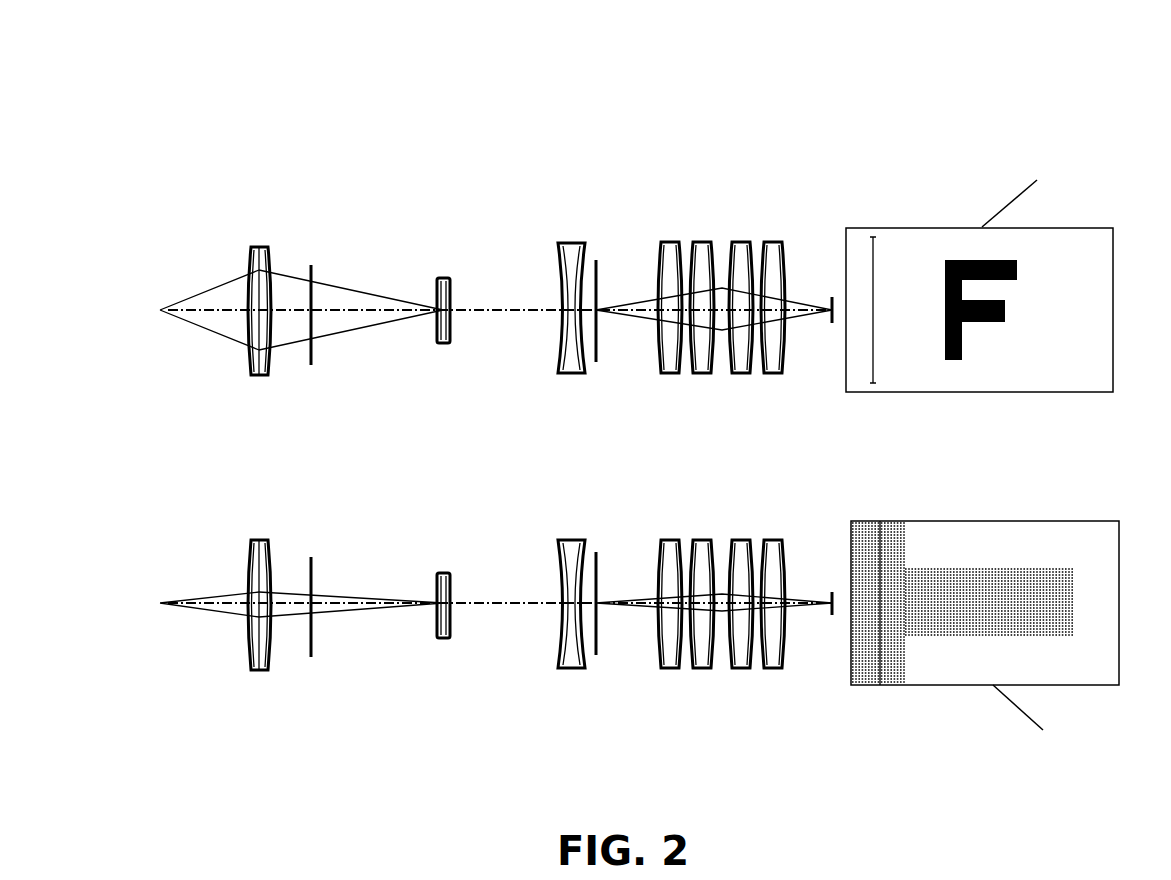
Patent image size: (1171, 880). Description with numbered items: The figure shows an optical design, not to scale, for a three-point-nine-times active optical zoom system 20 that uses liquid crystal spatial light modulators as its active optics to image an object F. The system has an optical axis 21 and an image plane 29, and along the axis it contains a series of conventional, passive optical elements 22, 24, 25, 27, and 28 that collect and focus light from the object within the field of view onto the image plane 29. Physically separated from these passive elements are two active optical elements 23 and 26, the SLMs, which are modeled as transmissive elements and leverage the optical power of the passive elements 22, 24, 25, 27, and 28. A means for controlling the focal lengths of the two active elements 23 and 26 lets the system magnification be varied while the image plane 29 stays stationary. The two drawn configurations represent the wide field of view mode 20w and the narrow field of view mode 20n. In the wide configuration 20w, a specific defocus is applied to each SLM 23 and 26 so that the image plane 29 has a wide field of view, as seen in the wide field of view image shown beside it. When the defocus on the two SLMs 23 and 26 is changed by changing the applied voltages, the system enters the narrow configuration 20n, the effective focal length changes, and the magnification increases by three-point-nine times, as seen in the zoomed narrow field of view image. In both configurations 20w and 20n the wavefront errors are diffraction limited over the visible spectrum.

The active optical zoom system 20 is at (708, 177).
The wide field of view configuration 20w is at (320, 213).
The narrow field of view configuration 20n is at (313, 697).
The optical axis 21 is at (216, 312).
The passive optical element 22 is at (259, 375).
The first active optical element 23 is at (311, 365).
The passive optical element 24 is at (443, 343).
The passive optical element 25 is at (571, 375).
The second active optical element 26 is at (596, 362).
The passive optical element 27 is at (663, 378).
The passive optical element 28 is at (735, 378).
The image plane 29 is at (832, 325).